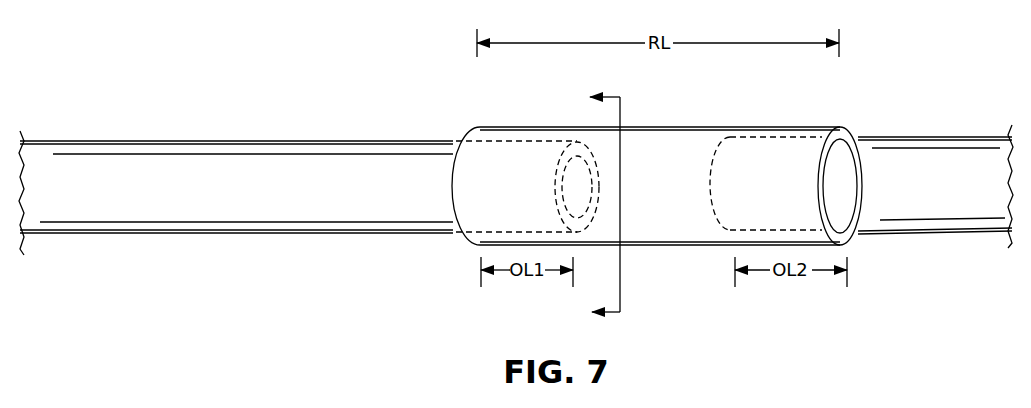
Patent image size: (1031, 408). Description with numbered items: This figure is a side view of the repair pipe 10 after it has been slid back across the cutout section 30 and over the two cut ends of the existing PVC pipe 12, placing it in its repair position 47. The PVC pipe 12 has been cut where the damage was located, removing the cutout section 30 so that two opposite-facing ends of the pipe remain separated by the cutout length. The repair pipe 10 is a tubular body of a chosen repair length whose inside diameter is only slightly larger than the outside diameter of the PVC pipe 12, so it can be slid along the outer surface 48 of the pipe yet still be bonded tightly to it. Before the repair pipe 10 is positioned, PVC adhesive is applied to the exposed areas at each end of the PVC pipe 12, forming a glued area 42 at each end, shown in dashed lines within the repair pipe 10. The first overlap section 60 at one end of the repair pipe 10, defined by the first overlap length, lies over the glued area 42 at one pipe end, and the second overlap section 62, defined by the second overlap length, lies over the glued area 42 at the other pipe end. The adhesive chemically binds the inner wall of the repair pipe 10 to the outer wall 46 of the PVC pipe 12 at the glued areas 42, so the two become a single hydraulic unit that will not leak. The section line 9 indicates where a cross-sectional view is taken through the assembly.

The section line 9- 9 is at (596, 205).
The repair pipe 10 is at (657, 186).
The PVC pipe 12 is at (516, 163).
The cutout section 30 is at (672, 215).
The glued area 42 is at (510, 137).
The outer wall 46 is at (193, 165).
The repair position 47 is at (880, 113).
The outer surface 48 is at (730, 125).
The first overlap section 60 is at (497, 188).
The second overlap section 62 is at (788, 183).